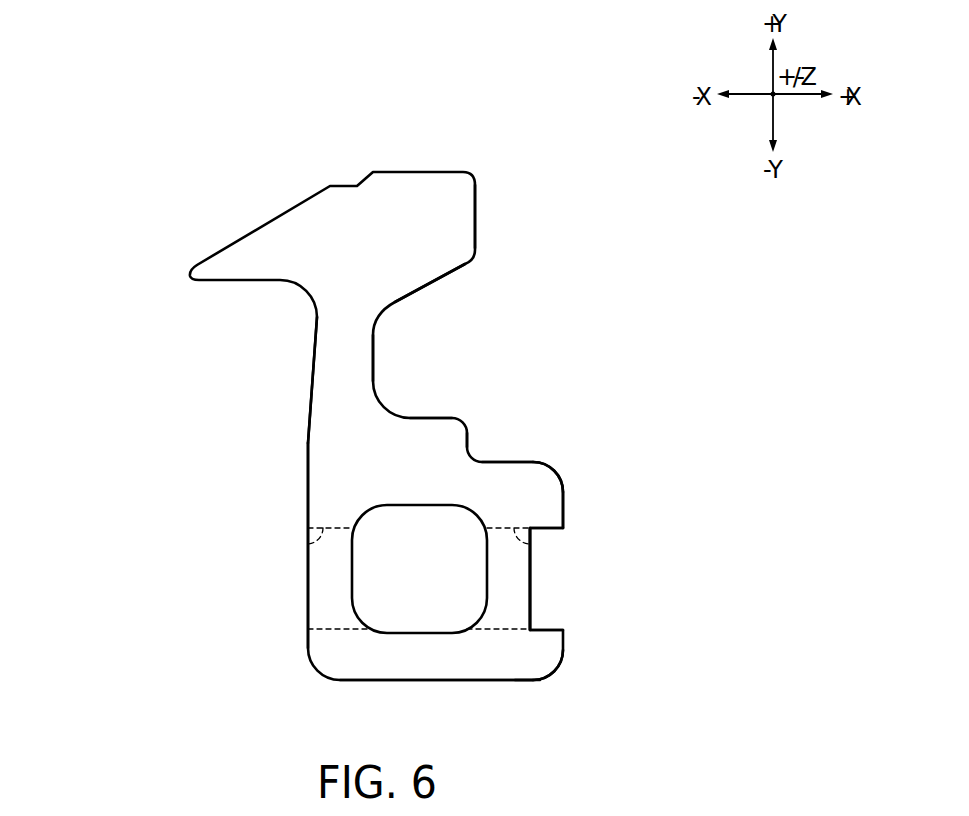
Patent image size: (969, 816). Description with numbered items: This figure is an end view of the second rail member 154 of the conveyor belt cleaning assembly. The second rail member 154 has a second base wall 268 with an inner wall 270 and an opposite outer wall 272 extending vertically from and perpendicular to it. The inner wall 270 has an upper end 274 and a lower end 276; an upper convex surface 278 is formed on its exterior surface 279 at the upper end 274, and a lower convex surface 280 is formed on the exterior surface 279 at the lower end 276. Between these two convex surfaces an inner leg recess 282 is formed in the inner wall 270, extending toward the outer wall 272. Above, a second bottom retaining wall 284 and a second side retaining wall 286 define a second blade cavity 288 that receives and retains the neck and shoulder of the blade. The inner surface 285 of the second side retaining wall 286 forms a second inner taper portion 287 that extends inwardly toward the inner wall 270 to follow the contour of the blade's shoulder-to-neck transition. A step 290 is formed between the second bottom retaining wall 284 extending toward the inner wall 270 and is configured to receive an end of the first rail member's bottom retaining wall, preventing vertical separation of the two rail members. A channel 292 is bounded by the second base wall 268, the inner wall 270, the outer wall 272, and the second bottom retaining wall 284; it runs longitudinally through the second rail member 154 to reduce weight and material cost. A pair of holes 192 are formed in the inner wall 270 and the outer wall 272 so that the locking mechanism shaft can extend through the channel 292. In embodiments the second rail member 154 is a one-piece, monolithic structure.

The second rail member 154 is at (136, 433).
The holes 192 is at (306, 548).
The second base wall 268 is at (435, 682).
The inner wall 270 is at (523, 590).
The outer wall 272 is at (315, 583).
The upper end 274 is at (533, 462).
The lower end 276 is at (532, 682).
The upper convex surface 278 is at (553, 465).
The exterior surface 279 is at (563, 512).
The lower convex surface 280 is at (553, 672).
The inner leg recess 282 is at (548, 582).
The second bottom retaining wall 284 is at (425, 418).
The inner surface 285 is at (475, 202).
The second side retaining wall 286 is at (320, 332).
The second inner taper portion 287 is at (440, 275).
The second blade cavity 288 is at (453, 348).
The step 290 is at (480, 462).
The channel 292 is at (398, 537).